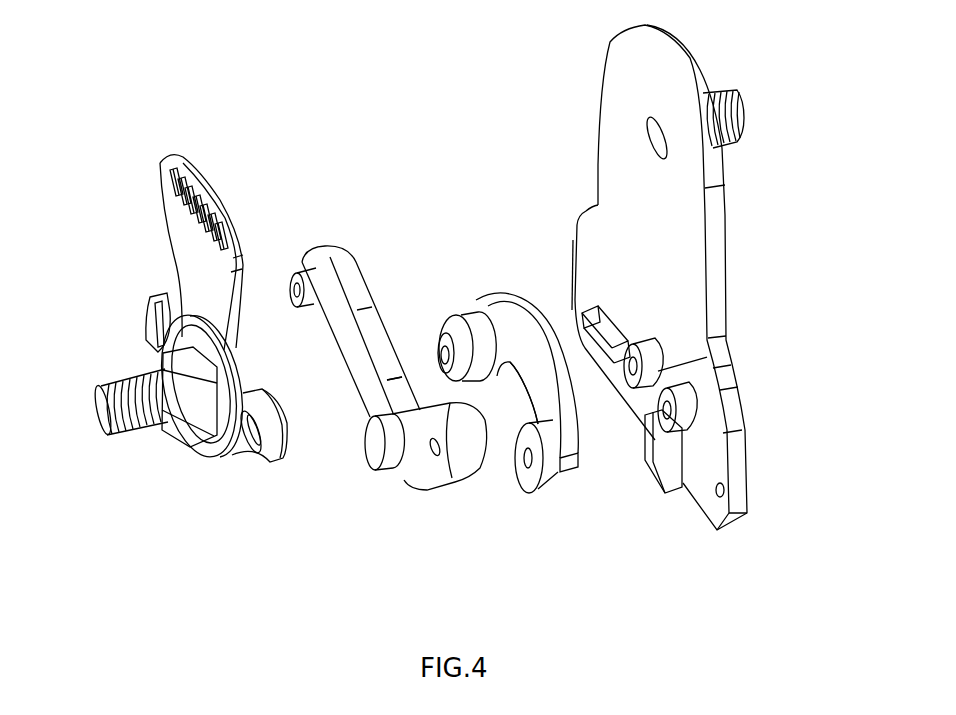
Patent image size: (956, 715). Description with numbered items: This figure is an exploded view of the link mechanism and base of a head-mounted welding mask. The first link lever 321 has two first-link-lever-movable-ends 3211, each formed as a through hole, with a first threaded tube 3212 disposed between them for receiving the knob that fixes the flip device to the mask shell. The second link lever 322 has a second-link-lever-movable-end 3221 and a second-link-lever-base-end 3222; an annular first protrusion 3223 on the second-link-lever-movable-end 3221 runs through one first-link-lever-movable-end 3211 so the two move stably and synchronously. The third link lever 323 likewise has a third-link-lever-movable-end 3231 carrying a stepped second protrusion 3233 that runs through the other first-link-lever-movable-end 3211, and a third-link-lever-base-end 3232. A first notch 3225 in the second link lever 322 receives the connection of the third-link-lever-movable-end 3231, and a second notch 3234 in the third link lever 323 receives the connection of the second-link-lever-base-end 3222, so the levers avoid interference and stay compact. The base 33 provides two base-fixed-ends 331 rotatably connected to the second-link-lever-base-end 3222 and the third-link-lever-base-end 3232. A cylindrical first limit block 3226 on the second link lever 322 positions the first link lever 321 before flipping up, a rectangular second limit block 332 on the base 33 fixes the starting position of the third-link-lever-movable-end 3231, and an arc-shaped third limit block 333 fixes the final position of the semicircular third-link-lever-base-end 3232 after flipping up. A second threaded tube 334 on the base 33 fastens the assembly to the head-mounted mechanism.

The first link lever 321 is at (262, 520).
The first-link-lever-movable-end 3211 is at (144, 302).
The first threaded tube 3212 is at (103, 435).
The second link lever 322 is at (443, 557).
The second-link-lever-movable-end 3221 is at (318, 257).
The second-link-lever-base-end 3222 is at (465, 450).
The first protrusion 3223 is at (300, 258).
The first notch 3225 is at (424, 404).
The first limit block 3226 is at (376, 441).
The third link lever 323 is at (583, 557).
The third-link-lever-movable-end 3231 is at (483, 320).
The third-link-lever-base-end 3232 is at (548, 478).
The second protrusion 3233 is at (443, 343).
The second notch 3234 is at (515, 397).
The base 33 is at (620, 178).
The base-fixed-end 331 is at (653, 370).
The second limit block 332 is at (596, 314).
The third limit block 333 is at (679, 493).
The second threaded tube 334 is at (750, 98).